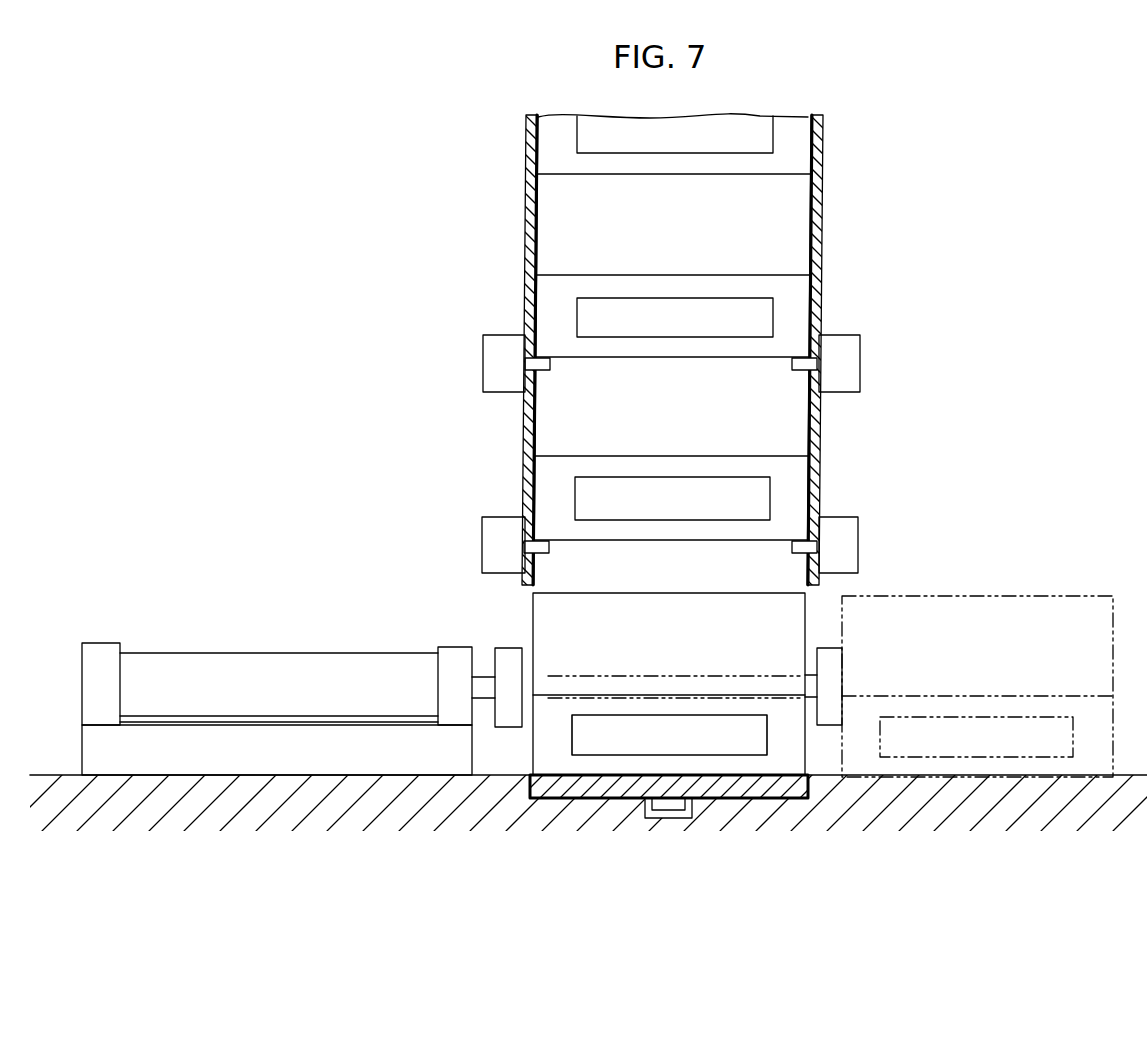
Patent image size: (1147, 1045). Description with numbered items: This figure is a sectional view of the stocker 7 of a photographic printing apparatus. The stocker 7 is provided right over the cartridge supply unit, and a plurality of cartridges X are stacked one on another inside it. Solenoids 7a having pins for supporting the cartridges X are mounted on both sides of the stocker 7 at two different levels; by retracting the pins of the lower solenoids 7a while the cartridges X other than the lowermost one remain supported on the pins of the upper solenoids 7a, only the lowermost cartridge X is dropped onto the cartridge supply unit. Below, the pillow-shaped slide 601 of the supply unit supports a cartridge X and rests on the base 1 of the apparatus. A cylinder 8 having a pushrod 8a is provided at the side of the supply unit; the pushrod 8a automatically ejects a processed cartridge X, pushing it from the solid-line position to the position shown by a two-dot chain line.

The base 1 is at (447, 813).
The stocker 7 is at (826, 242).
The solenoids 7a is at (853, 365).
The cylinder 8 is at (283, 675).
The pushrod 8a is at (508, 658).
The slide 601 is at (738, 800).
The cartridge X is at (558, 239).